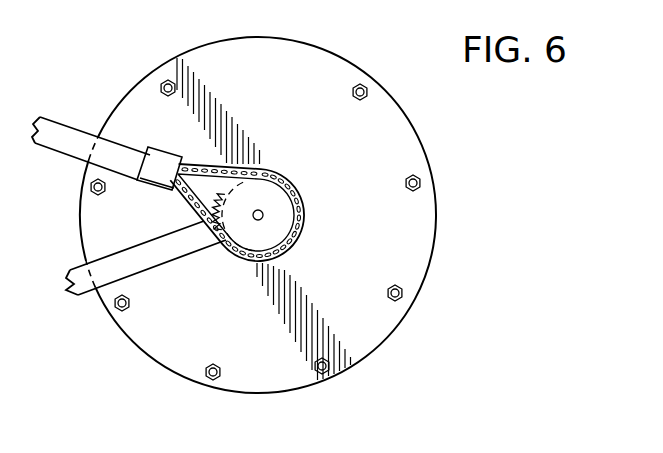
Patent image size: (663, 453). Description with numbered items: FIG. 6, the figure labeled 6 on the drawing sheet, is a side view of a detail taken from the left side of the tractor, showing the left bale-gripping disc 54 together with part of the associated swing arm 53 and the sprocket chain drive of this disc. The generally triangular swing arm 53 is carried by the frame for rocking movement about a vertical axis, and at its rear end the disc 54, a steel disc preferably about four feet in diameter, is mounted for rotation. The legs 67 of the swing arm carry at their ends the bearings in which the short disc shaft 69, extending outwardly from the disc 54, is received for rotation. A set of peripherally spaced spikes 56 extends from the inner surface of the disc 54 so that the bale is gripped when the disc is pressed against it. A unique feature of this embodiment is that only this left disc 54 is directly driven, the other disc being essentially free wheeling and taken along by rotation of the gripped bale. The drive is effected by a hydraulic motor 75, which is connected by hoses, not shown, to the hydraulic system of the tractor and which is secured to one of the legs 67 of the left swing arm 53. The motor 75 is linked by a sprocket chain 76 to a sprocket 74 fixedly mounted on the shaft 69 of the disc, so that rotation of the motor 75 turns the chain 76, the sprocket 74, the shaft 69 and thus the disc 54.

The view direction arrow / upper support arm 6 is at (62, 107).
The swing arm 53 is at (140, 255).
The left disc 54 is at (331, 54).
The peripherally spaced spikes 56 is at (368, 92).
The legs 67 is at (146, 252).
The disc shaft 69 is at (262, 219).
The sprocket 74 is at (260, 190).
The hydraulic motor 75 is at (155, 147).
The sprocket chain 76 is at (214, 163).